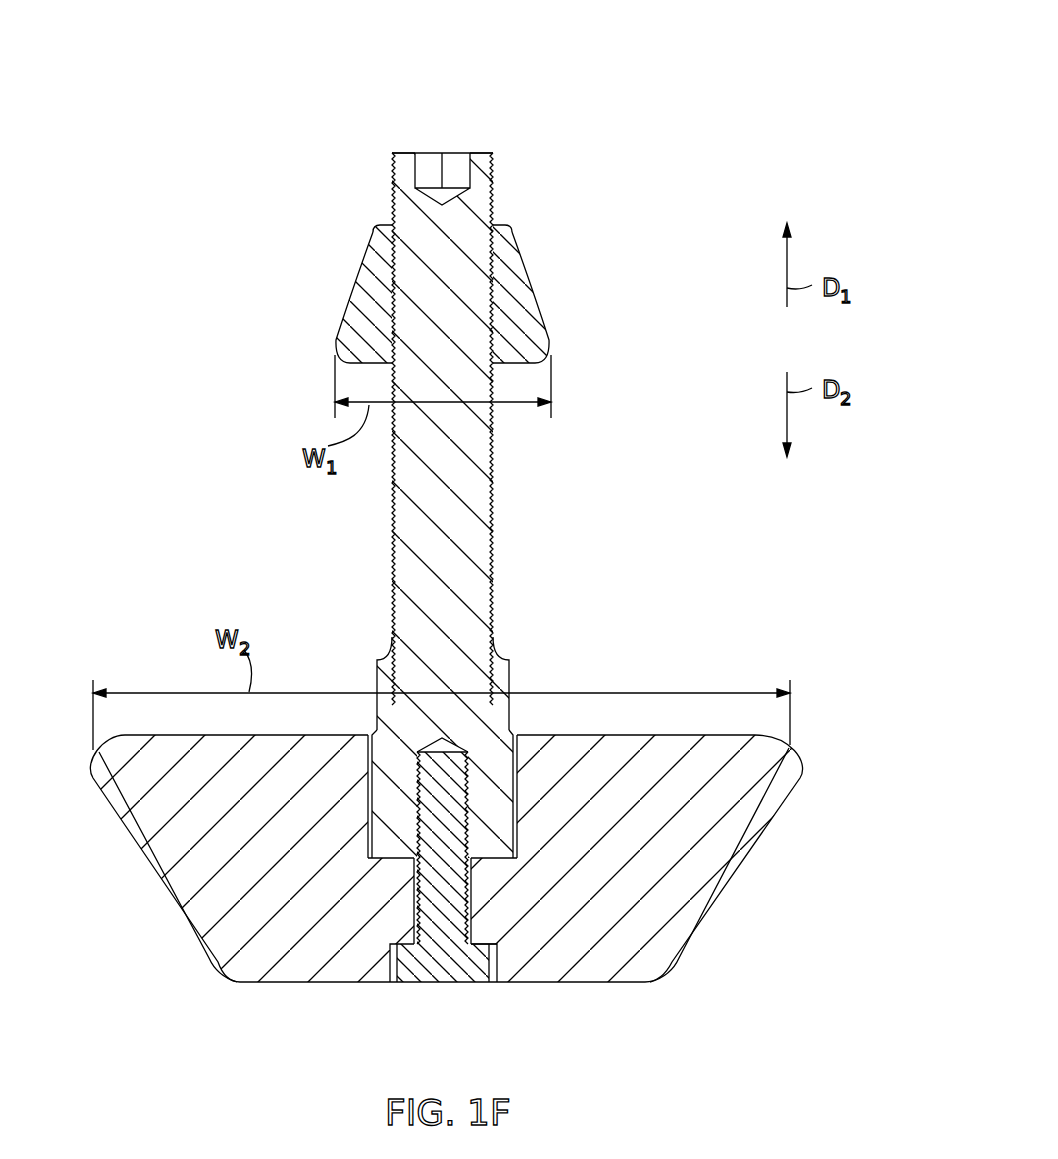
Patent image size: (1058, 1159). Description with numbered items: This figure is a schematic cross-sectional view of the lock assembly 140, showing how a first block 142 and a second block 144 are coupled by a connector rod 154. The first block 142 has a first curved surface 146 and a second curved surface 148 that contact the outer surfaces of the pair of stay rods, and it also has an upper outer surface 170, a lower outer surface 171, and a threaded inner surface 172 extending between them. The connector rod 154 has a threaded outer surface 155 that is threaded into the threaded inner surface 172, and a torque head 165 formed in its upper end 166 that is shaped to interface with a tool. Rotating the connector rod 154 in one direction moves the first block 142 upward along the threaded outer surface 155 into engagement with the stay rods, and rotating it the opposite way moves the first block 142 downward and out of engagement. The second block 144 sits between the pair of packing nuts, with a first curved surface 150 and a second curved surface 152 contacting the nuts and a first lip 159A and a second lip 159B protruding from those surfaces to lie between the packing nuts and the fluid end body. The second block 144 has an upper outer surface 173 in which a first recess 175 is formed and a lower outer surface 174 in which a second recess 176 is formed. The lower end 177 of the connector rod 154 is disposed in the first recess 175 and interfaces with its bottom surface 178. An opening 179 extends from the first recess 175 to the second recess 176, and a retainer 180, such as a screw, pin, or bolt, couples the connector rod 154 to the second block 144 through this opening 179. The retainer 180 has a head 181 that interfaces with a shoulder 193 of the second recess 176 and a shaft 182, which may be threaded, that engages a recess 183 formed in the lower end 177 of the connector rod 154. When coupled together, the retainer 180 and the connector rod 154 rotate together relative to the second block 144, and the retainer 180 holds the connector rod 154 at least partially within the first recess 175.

The lock assembly 140 is at (690, 40).
The first block 142 is at (437, 300).
The second block 144 is at (477, 861).
The first curved surface 146 is at (358, 282).
The second curved surface 148 is at (535, 300).
The first curved surface 150 is at (145, 850).
The second curved surface 152 is at (750, 840).
The connector rod 154 is at (472, 466).
The threaded outer surface 155 is at (395, 252).
The first lip 159A is at (168, 898).
The second lip 159B is at (718, 898).
The torque head 165 is at (453, 165).
The upper end 166 is at (405, 152).
The upper outer surface 170 is at (497, 225).
The lower outer surface 171 is at (522, 363).
The threaded inner surface 172 is at (500, 265).
The upper outer surface 173 is at (238, 733).
The lower outer surface 174 is at (275, 985).
The first recess 175 is at (370, 790).
The second recess 176 is at (393, 965).
The lower end 177 is at (396, 858).
The bottom surface 178 is at (473, 858).
The opening 179 is at (470, 897).
The retainer 180 is at (443, 793).
The head 181 is at (452, 970).
The shaft 182 is at (443, 850).
The recess 183 is at (367, 745).
The shoulder 193 is at (477, 945).